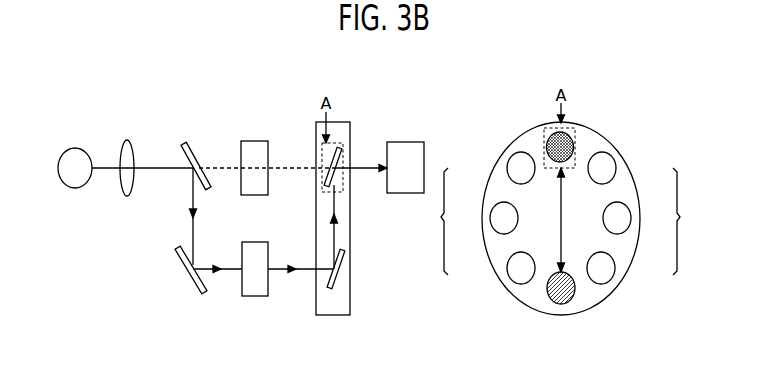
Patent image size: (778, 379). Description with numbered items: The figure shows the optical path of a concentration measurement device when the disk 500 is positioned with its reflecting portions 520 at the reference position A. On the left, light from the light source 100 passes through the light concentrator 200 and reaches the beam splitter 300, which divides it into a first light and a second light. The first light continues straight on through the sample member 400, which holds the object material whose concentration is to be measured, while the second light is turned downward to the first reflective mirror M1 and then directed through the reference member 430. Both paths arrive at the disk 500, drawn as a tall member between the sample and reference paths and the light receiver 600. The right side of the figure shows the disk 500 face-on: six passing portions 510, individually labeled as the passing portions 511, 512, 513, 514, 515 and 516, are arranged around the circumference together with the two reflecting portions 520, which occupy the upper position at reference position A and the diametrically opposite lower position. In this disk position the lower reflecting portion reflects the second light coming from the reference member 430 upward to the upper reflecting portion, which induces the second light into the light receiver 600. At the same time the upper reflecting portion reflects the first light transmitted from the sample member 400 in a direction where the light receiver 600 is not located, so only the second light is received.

The light source 100 is at (80, 148).
The light concentrator 200 is at (128, 140).
The beam splitter 300 is at (187, 141).
The sample member 400 is at (258, 141).
The reference member 430 is at (258, 297).
The disk 500 is at (340, 316).
The passing portions 510 is at (560, 218).
The passing portion 511 is at (616, 166).
The passing portion 512 is at (631, 218).
The passing portion 513 is at (614, 268).
The passing portion 514 is at (508, 268).
The passing portion 515 is at (490, 218).
The passing portion 516 is at (507, 166).
The reflecting portions 520 is at (572, 220).
The light receiver 600 is at (413, 142).
The first reflective mirror M1 is at (182, 268).